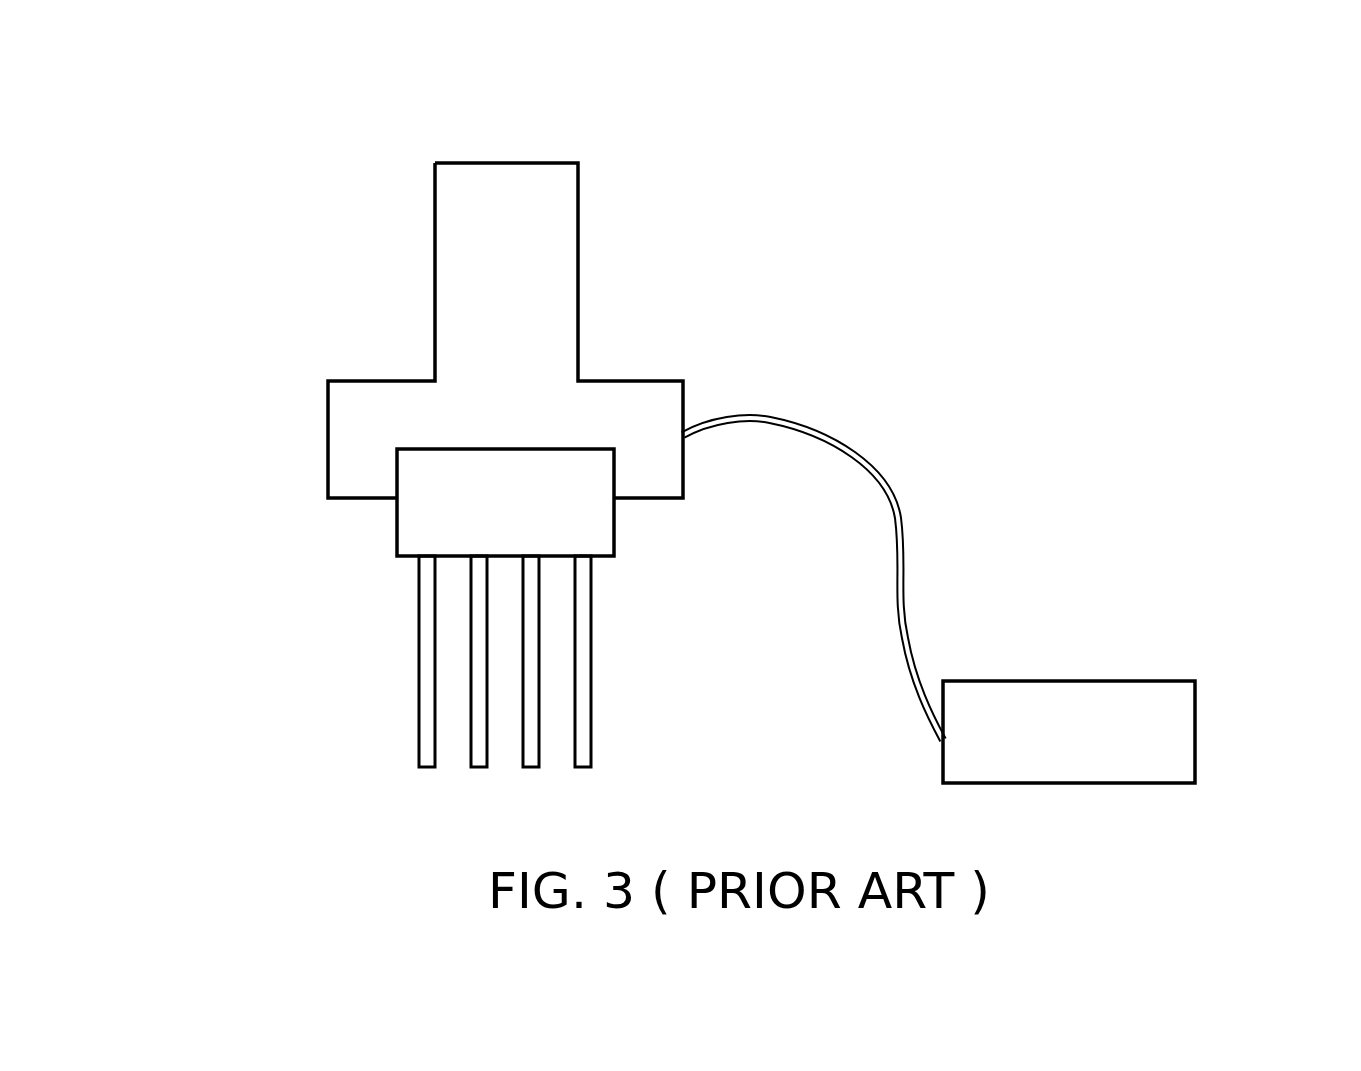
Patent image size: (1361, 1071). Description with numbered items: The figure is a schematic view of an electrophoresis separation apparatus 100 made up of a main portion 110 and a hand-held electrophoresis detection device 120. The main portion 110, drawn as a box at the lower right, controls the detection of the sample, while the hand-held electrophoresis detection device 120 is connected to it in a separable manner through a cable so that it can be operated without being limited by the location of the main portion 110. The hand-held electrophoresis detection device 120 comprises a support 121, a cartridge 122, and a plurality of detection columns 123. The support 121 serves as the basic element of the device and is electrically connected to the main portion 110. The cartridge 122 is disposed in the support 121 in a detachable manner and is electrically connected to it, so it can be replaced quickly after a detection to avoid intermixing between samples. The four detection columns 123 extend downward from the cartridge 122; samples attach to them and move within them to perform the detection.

The electrophoresis separation apparatus 100 is at (97, 73).
The main portion 110 is at (1195, 729).
The hand-held electrophoresis detection device 120 is at (464, 465).
The support 121 is at (578, 240).
The cartridge 122 is at (418, 473).
The detection columns 123 is at (591, 704).